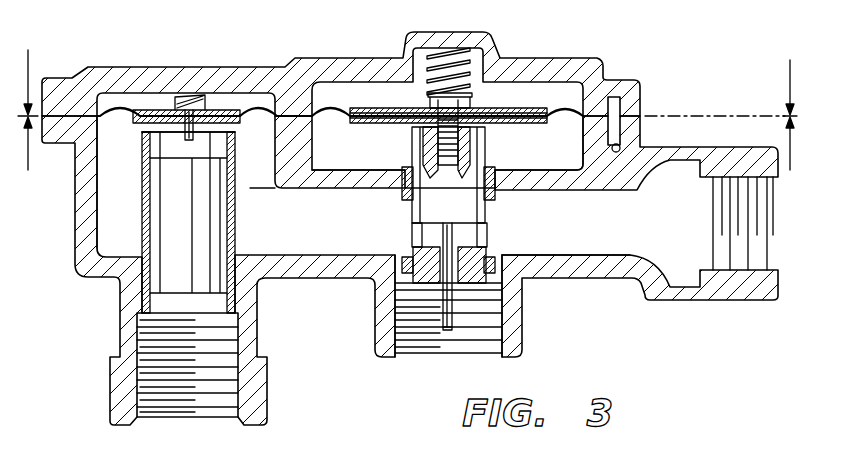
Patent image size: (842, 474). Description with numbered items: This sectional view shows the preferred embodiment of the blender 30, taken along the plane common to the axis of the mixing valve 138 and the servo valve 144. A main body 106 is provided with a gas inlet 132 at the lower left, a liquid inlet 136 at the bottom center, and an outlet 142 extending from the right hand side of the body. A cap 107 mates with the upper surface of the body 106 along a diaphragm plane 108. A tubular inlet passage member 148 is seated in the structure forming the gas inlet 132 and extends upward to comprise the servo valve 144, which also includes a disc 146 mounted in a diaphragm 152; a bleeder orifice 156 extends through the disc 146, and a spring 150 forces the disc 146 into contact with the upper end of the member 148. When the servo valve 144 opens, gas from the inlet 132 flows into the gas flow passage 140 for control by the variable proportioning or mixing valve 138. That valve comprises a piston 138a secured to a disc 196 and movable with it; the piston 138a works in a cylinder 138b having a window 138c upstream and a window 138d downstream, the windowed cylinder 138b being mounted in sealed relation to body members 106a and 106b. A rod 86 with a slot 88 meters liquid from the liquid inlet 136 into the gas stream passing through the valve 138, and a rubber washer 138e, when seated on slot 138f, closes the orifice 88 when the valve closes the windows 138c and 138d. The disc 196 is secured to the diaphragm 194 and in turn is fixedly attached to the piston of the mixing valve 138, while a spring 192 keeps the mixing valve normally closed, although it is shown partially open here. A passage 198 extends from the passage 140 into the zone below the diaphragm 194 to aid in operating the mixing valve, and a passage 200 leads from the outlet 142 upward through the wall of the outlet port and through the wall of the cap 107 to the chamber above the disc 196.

The blender 30 is at (336, 20).
The cap 107 is at (641, 80).
The diaphragm plane 108 is at (642, 115).
The main body 106 is at (766, 302).
The body member 106a is at (498, 171).
The body member 106b is at (398, 268).
The passage 200 is at (622, 147).
The outlet 142 is at (737, 240).
The gas inlet 132 is at (200, 377).
The tubular inlet passage member 148 is at (143, 193).
The bleeder orifice 156 is at (191, 150).
The spring 150 is at (195, 96).
The diaphragm 152 is at (122, 88).
The disc 146 is at (242, 126).
The servo valve 144 is at (143, 127).
The disc 196 is at (525, 119).
The diaphragm 194 is at (558, 110).
The spring 192 is at (484, 58).
The mixing valve 138 is at (456, 192).
The piston 138a is at (416, 153).
The cylinder 138b is at (410, 250).
The window 138c is at (411, 231).
The window 138d is at (474, 247).
The rubber washer 138e is at (472, 229).
The slot 138f is at (520, 279).
The slot 88 is at (447, 303).
The rod 86 is at (438, 320).
The liquid inlet 136 is at (478, 333).
The passage 198 is at (328, 188).
The gas flow passage 140 is at (286, 233).